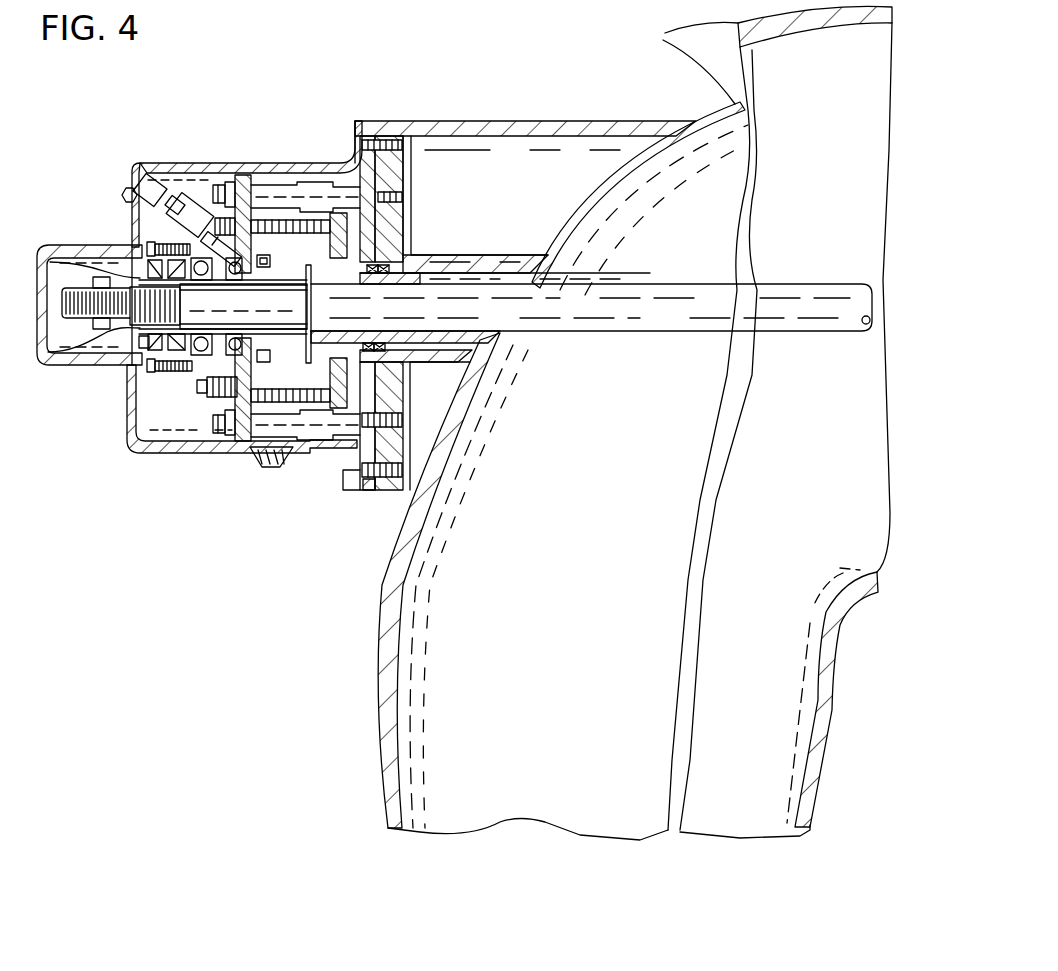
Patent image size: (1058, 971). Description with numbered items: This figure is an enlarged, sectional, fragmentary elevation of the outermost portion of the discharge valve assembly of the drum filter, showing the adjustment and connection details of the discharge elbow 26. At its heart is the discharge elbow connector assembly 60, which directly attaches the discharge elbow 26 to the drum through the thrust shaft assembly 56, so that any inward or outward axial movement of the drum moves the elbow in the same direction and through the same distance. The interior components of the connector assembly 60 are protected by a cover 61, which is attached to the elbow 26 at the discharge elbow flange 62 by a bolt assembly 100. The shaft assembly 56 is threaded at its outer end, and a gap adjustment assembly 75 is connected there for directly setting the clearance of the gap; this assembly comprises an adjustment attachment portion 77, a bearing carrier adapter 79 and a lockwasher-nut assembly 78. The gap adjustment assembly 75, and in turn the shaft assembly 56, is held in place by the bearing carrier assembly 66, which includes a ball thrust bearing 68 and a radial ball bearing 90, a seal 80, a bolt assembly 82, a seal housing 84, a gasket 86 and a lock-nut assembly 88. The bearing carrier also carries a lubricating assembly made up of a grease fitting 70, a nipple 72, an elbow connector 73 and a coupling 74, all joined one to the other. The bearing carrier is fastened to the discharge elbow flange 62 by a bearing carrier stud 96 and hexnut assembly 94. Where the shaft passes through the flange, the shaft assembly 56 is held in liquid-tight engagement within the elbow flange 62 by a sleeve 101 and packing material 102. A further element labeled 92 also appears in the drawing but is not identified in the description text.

The discharge elbow 26 is at (668, 33).
The thrust shaft assembly 56 is at (643, 286).
The discharge elbow connector assembly 60 is at (522, 121).
The cover 61 is at (303, 162).
The discharge elbow flange 62 is at (448, 121).
The bearing carrier assembly 66 is at (245, 180).
The ball thrust bearing 68 is at (268, 228).
The grease fitting 70 is at (122, 192).
The nipple 72 is at (172, 198).
The elbow connector 73 is at (192, 196).
The coupling 74 is at (146, 186).
The gap adjustment assembly 75 is at (107, 270).
The adjustment attachment portion 77 is at (60, 250).
The lockwasher-nut assembly 78 is at (58, 356).
The bearing carrier adapter 79 is at (270, 264).
The seal 80 is at (95, 350).
The bolt assembly 82 is at (139, 348).
The seal housing 84 is at (157, 370).
The gasket 86 is at (152, 386).
The lock-nut assembly 88 is at (176, 372).
The radial ball bearing 90 is at (214, 352).
The spring seat 92 is at (204, 394).
The hexnut assembly 94 is at (228, 436).
The bearing carrier stud 96 is at (293, 450).
The bolt assembly 100 is at (362, 492).
The sleeve 101 is at (306, 348).
The packing material 102 is at (383, 284).